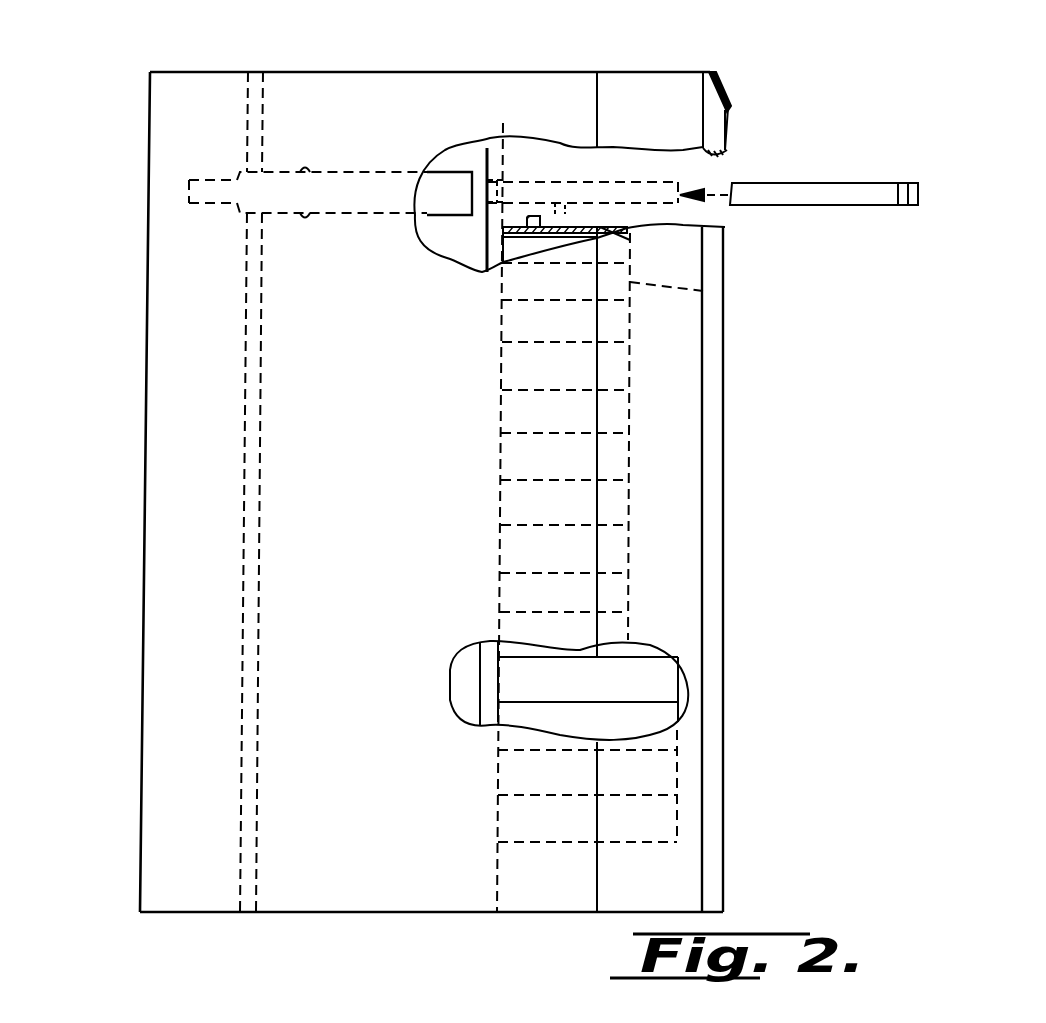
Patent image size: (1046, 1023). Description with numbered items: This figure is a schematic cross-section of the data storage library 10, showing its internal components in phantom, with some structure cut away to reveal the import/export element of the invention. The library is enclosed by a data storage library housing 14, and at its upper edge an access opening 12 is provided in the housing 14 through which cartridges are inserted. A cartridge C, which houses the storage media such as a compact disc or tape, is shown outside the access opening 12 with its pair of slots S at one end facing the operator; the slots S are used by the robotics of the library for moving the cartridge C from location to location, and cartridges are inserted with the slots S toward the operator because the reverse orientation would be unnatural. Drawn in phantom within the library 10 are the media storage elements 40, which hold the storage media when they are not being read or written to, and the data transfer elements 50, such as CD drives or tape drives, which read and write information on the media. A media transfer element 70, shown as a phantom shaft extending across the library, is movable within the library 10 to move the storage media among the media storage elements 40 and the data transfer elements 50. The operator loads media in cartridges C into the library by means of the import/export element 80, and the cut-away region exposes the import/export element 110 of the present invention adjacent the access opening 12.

The storage media library 10 is at (113, 168).
The access opening 12 is at (726, 155).
The data storage library housing 14 is at (688, 73).
The media storage element 40 is at (620, 232).
The data transfer element 50 is at (662, 783).
The media transfer element 70 is at (327, 187).
The import/export element 80 is at (541, 216).
The import/export element 110 is at (541, 216).
The cartridge C is at (790, 181).
The slot S is at (908, 183).